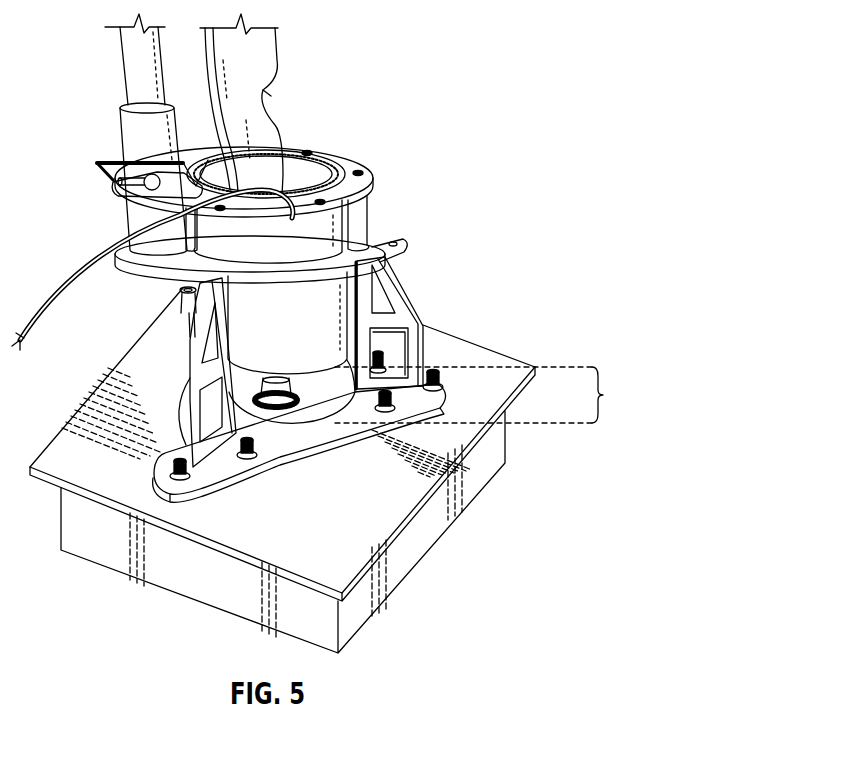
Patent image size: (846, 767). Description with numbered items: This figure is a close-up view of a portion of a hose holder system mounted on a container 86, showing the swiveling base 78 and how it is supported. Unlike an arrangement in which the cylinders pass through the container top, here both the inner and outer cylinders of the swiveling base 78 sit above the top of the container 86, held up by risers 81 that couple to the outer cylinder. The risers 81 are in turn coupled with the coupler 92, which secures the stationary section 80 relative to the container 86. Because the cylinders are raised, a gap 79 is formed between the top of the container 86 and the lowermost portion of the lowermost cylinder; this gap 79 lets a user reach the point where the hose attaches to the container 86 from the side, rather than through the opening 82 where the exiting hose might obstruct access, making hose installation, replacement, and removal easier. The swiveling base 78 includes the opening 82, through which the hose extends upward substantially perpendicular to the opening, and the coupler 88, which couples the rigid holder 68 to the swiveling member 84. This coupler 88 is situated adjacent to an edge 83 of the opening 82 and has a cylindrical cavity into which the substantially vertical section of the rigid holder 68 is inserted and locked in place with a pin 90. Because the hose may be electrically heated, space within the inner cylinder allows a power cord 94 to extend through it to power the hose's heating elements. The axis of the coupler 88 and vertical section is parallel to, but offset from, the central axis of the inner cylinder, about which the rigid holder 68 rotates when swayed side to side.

The rigid holder 68 is at (118, 58).
The swiveling base 78 is at (377, 187).
The gap 79 is at (399, 415).
The stationary section 80 is at (330, 313).
The risers 81 is at (423, 317).
The opening 82 is at (318, 152).
The edge 83 is at (213, 157).
The swiveling member 84 is at (367, 163).
The container 86 is at (430, 555).
The coupler 88 is at (120, 125).
The pin 90 is at (100, 168).
The coupler 92 is at (310, 438).
The power cord 94 is at (70, 283).